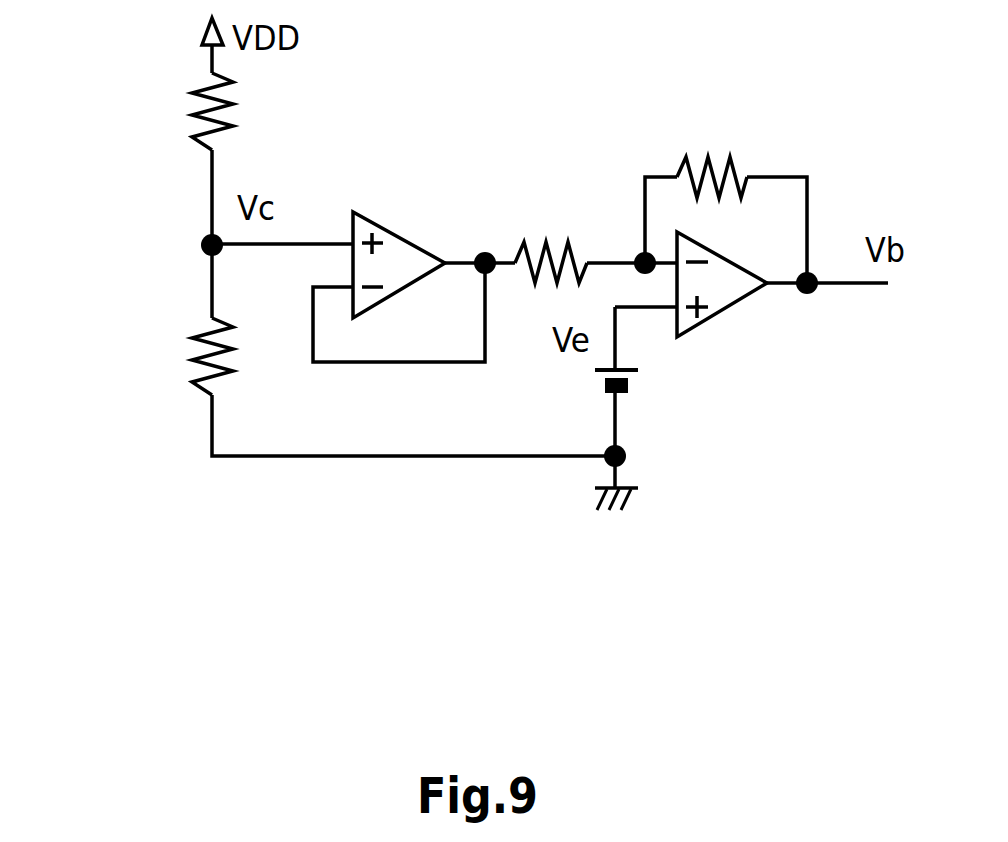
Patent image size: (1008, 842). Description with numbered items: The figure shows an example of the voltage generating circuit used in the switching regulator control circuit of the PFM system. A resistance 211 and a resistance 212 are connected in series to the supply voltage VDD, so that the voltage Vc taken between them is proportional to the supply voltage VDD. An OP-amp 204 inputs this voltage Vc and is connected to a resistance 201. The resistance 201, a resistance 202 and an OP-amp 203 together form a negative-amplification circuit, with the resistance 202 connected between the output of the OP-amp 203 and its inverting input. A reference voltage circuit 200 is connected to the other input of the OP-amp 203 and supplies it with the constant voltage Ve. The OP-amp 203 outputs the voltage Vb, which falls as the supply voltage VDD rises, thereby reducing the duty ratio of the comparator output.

The reference voltage circuit 200 is at (593, 380).
The resistance 201 is at (557, 233).
The resistance 202 is at (737, 168).
The OP-amp 203 is at (727, 317).
The OP-amp 204 is at (393, 222).
The resistance 211 is at (182, 119).
The resistance 212 is at (193, 350).